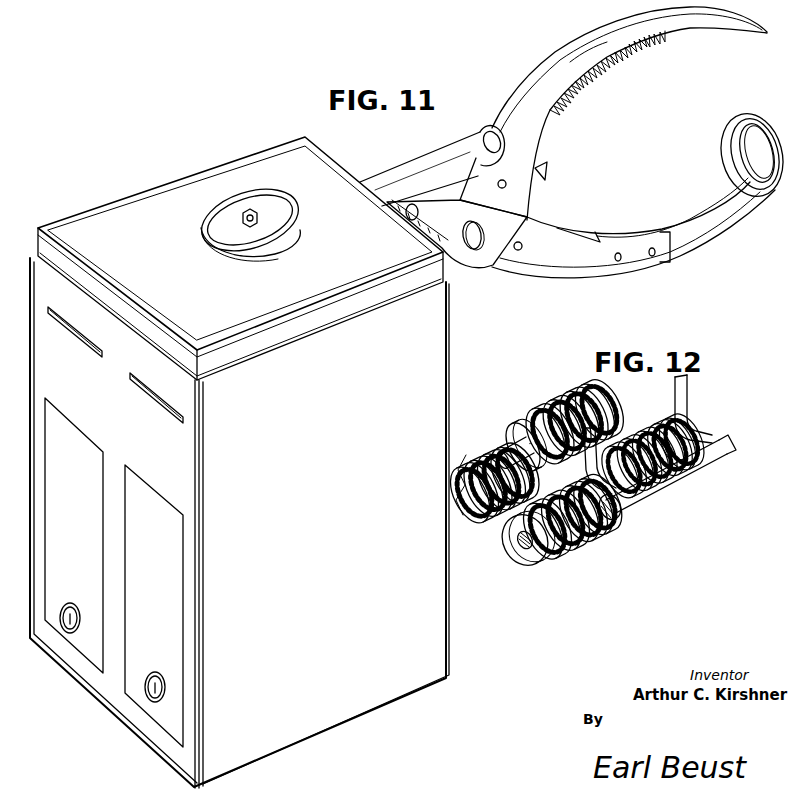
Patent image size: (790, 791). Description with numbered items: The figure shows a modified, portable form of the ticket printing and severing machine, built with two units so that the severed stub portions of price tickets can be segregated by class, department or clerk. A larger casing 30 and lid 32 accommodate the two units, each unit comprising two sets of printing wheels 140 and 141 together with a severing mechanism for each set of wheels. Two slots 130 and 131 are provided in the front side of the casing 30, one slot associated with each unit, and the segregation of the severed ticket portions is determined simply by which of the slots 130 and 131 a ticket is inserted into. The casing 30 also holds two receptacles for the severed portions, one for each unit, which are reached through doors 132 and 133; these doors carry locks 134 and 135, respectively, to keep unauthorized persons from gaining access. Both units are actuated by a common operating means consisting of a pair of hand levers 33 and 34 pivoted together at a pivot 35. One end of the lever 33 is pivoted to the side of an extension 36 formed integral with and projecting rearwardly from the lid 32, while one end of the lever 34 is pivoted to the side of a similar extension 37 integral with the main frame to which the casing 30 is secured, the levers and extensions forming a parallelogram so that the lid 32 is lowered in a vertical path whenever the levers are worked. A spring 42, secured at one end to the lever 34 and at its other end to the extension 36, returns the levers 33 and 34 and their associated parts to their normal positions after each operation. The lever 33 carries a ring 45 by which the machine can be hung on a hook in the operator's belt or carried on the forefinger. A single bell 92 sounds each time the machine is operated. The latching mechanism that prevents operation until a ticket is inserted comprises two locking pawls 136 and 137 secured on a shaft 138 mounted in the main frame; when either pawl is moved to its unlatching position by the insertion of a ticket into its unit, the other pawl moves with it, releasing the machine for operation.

In FIG. 11, the casing 30 is at (437, 626).
In FIG. 11, the lid 32 is at (134, 200).
In FIG. 11, the bell 92 is at (218, 218).
In FIG. 11, the slot 130 is at (68, 325).
In FIG. 11, the slot 131 is at (146, 398).
In FIG. 11, the door 132 is at (102, 452).
In FIG. 11, the door 133 is at (185, 520).
In FIG. 11, the lock 134 is at (64, 626).
In FIG. 11, the lock 135 is at (148, 695).
In FIG. 11, the hand lever 33 is at (612, 272).
In FIG. 11, the hand lever 34 is at (589, 44).
In FIG. 11, the pivot 35 is at (482, 232).
In FIG. 11, the extension 36 is at (438, 158).
In FIG. 11, the extension 37 is at (480, 268).
In FIG. 11, the spring 42 is at (605, 94).
In FIG. 11, the ring 45 is at (745, 113).
In FIG. 12, the locking pawl 136 is at (688, 408).
In FIG. 12, the locking pawl 137 is at (596, 450).
In FIG. 12, the shaft 138 is at (646, 497).
In FIG. 12, the printing wheels 140 is at (508, 542).
In FIG. 12, the printing wheels 141 is at (660, 437).